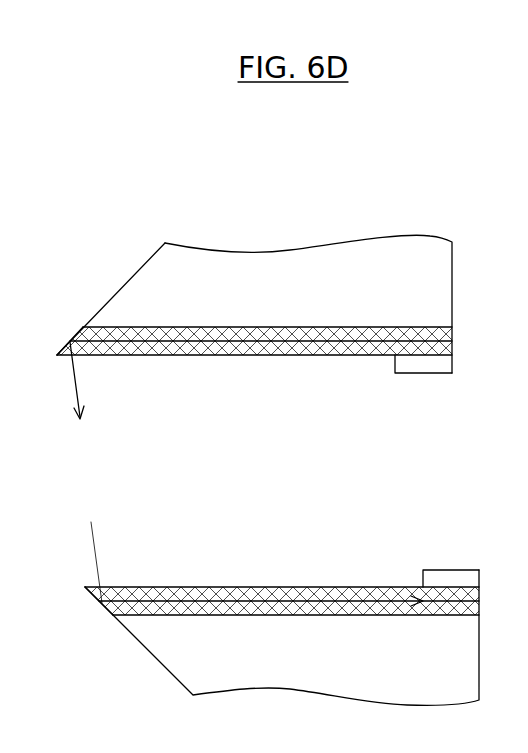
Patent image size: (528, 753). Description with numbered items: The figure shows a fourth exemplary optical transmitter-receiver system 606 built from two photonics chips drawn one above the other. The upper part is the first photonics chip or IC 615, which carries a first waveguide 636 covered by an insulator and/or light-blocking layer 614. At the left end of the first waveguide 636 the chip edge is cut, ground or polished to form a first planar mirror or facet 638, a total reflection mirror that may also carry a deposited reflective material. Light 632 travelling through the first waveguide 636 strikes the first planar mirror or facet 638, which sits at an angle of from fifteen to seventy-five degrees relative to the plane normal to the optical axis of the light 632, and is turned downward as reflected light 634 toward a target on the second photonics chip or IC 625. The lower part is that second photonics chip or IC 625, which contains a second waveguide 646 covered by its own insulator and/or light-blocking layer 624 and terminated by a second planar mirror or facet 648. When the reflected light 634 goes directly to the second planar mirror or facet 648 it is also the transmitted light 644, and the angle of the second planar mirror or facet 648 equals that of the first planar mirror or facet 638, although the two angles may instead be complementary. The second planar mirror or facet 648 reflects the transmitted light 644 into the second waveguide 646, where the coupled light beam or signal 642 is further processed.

The optical transmitter-receiver system 606 is at (281, 177).
The first photonics chip or IC 615 is at (425, 279).
The light 632 is at (233, 339).
The first waveguide 636 is at (233, 357).
The first planar mirror or facet 638 is at (78, 331).
The reflected light 634 is at (75, 377).
The insulator and/or light-blocking layer 614 is at (422, 365).
The second photonics chip or IC 625 is at (450, 687).
The second waveguide 646 is at (318, 587).
The coupled light beam or signal 642 is at (292, 603).
The transmitted light 644 is at (95, 543).
The second planar mirror or facet 648 is at (102, 608).
The insulator and/or light-blocking layer 624 is at (443, 572).